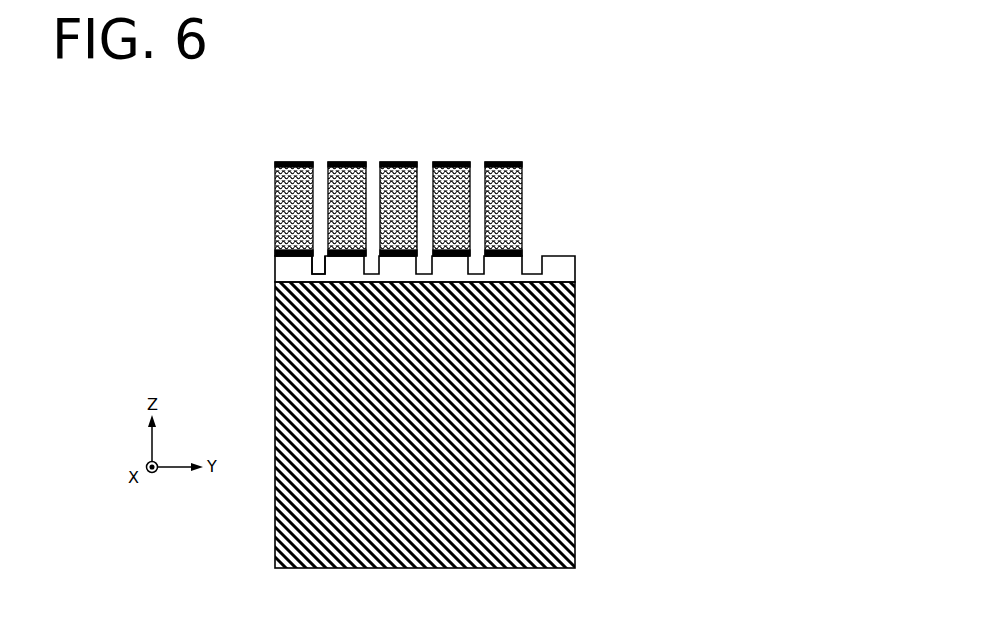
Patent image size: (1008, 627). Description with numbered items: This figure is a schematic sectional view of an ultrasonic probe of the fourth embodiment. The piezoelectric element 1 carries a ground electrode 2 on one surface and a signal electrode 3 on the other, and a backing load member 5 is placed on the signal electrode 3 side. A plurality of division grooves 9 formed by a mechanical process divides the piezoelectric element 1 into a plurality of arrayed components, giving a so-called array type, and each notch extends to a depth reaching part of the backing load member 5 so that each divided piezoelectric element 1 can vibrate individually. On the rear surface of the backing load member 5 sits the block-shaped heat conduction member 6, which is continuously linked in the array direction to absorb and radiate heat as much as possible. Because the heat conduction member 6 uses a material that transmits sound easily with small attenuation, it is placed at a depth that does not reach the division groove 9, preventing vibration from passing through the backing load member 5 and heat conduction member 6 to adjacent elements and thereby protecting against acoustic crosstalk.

The piezoelectric element 1 is at (520, 207).
The ground electrode 2 is at (512, 157).
The signal electrode 3 is at (426, 245).
The backing load member 5 is at (579, 270).
The heat conduction member 6 is at (556, 411).
The division groove 9 is at (310, 251).